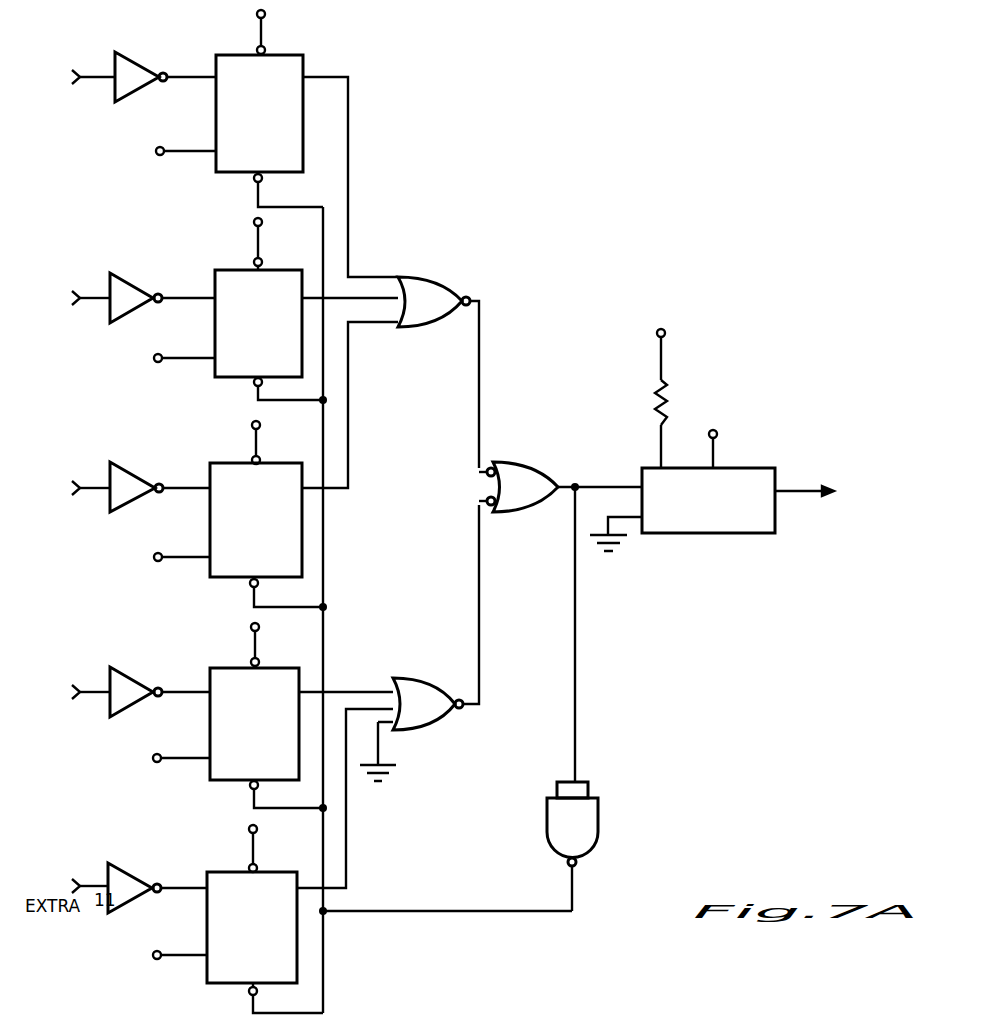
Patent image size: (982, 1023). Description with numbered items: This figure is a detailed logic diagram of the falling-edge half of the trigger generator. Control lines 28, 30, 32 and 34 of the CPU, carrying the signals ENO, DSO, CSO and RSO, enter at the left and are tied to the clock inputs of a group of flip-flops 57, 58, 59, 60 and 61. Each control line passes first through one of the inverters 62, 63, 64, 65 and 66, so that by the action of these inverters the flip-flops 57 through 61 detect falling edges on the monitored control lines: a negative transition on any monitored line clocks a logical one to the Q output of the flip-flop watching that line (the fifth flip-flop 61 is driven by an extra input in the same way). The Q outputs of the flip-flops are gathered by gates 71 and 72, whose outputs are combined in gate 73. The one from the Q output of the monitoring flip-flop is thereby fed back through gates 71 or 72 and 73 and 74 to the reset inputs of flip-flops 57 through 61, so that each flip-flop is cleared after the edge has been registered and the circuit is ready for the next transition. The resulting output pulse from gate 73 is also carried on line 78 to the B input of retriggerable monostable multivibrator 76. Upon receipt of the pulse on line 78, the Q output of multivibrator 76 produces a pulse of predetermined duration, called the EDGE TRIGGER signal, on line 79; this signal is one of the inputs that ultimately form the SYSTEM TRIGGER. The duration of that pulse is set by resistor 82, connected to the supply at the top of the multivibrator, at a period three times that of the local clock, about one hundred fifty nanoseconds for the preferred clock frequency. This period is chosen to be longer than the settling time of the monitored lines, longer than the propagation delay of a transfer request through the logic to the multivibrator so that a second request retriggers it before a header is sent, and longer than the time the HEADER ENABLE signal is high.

The control line 30 is at (73, 73).
The control line 32 is at (70, 295).
The control line 28 is at (70, 484).
The control line 34 is at (70, 684).
The inverter 62 is at (143, 64).
The inverter 63 is at (138, 286).
The inverter 64 is at (141, 482).
The inverter 65 is at (142, 685).
The inverter 66 is at (140, 877).
The flip-flop 57 is at (269, 139).
The flip-flop 58 is at (268, 308).
The flip-flop 59 is at (268, 467).
The flip-flop 60 is at (265, 711).
The flip-flop 61 is at (355, 861).
The gate 71 is at (429, 355).
The gate 72 is at (413, 643).
The gate 73 is at (560, 484).
The gate 74 is at (585, 842).
The retriggerable monostable multivibrator 76 is at (682, 485).
The line 78 is at (585, 607).
The line 79 is at (804, 499).
The resistor 82 is at (638, 394).